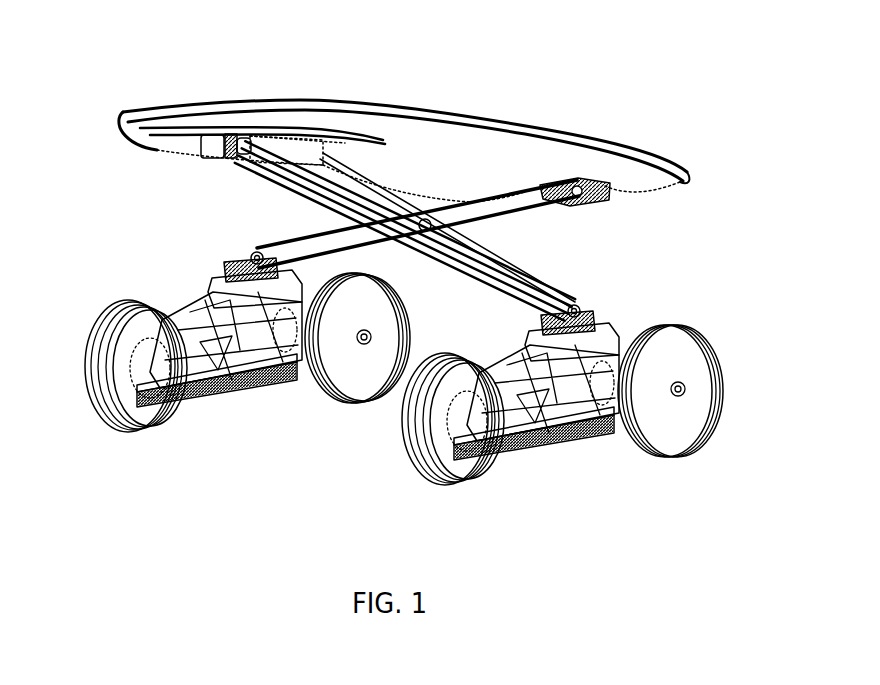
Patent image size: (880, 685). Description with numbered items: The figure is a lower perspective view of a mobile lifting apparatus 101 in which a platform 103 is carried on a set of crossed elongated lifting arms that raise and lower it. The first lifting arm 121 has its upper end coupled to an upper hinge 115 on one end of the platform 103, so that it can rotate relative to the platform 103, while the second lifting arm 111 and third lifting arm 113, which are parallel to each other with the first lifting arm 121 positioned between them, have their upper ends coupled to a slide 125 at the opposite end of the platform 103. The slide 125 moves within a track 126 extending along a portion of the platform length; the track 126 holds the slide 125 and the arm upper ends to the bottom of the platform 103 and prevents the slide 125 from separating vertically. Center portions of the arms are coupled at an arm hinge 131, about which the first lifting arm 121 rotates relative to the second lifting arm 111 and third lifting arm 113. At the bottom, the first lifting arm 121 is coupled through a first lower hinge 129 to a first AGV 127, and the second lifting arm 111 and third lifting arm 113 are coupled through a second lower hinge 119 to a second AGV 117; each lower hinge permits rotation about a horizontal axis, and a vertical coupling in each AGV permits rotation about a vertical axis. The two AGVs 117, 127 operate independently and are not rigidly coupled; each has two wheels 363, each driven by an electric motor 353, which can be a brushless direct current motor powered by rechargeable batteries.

The mobile lifting apparatus 101 is at (203, 80).
The platform 103 is at (520, 126).
The second lifting arm 111 is at (514, 272).
The third lifting arm 113 is at (462, 270).
The upper hinge 115 is at (582, 196).
The second AGV 117 is at (594, 450).
The second lower hinge 119 is at (581, 310).
The first lifting arm 121 is at (351, 243).
The slide 125 is at (233, 154).
The track 126 is at (218, 148).
The first AGV 127 is at (195, 398).
The first lower hinge 129 is at (250, 256).
The arm hinge 131 is at (432, 226).
The electric motor 353 is at (221, 392).
The wheel 363 is at (112, 324).